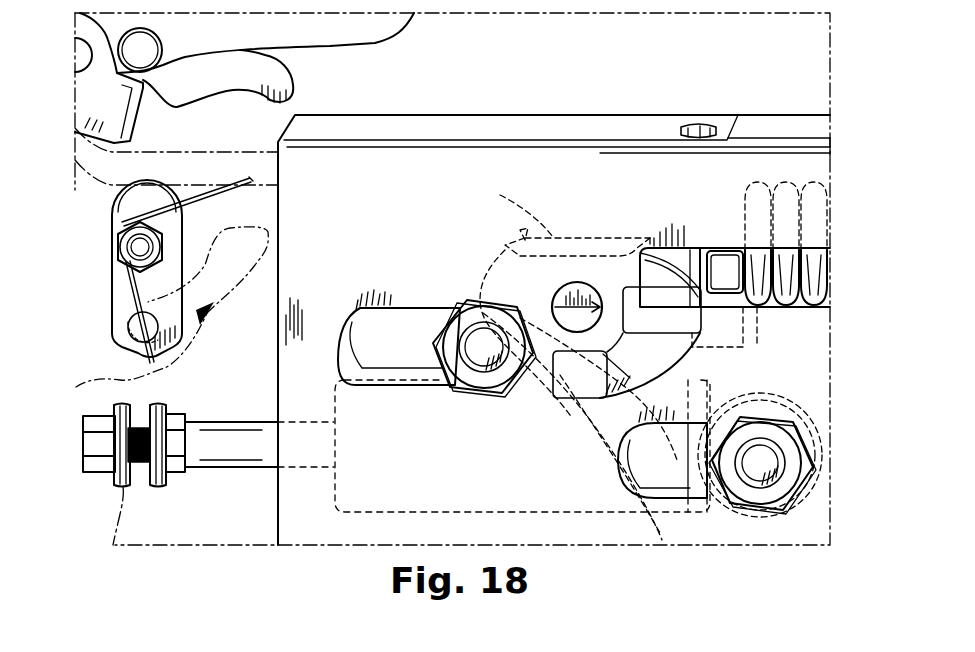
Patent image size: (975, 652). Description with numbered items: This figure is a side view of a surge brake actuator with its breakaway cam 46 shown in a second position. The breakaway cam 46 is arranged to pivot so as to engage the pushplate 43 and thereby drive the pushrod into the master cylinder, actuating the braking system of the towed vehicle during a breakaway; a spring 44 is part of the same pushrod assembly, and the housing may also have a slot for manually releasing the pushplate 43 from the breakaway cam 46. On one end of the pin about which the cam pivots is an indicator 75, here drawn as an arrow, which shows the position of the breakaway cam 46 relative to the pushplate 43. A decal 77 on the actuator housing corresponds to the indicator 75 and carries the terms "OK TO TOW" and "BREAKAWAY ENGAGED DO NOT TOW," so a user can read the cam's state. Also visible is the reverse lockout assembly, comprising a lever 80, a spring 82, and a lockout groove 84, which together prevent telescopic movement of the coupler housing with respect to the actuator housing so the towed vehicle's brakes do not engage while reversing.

The pushplate 43 is at (730, 270).
The spring 44 is at (697, 130).
The breakaway cam 46 is at (568, 362).
The indicator 75 is at (566, 316).
The decal 77 is at (630, 343).
The lever 80 is at (150, 283).
The spring 82 is at (127, 285).
The lockout groove 84 is at (155, 315).